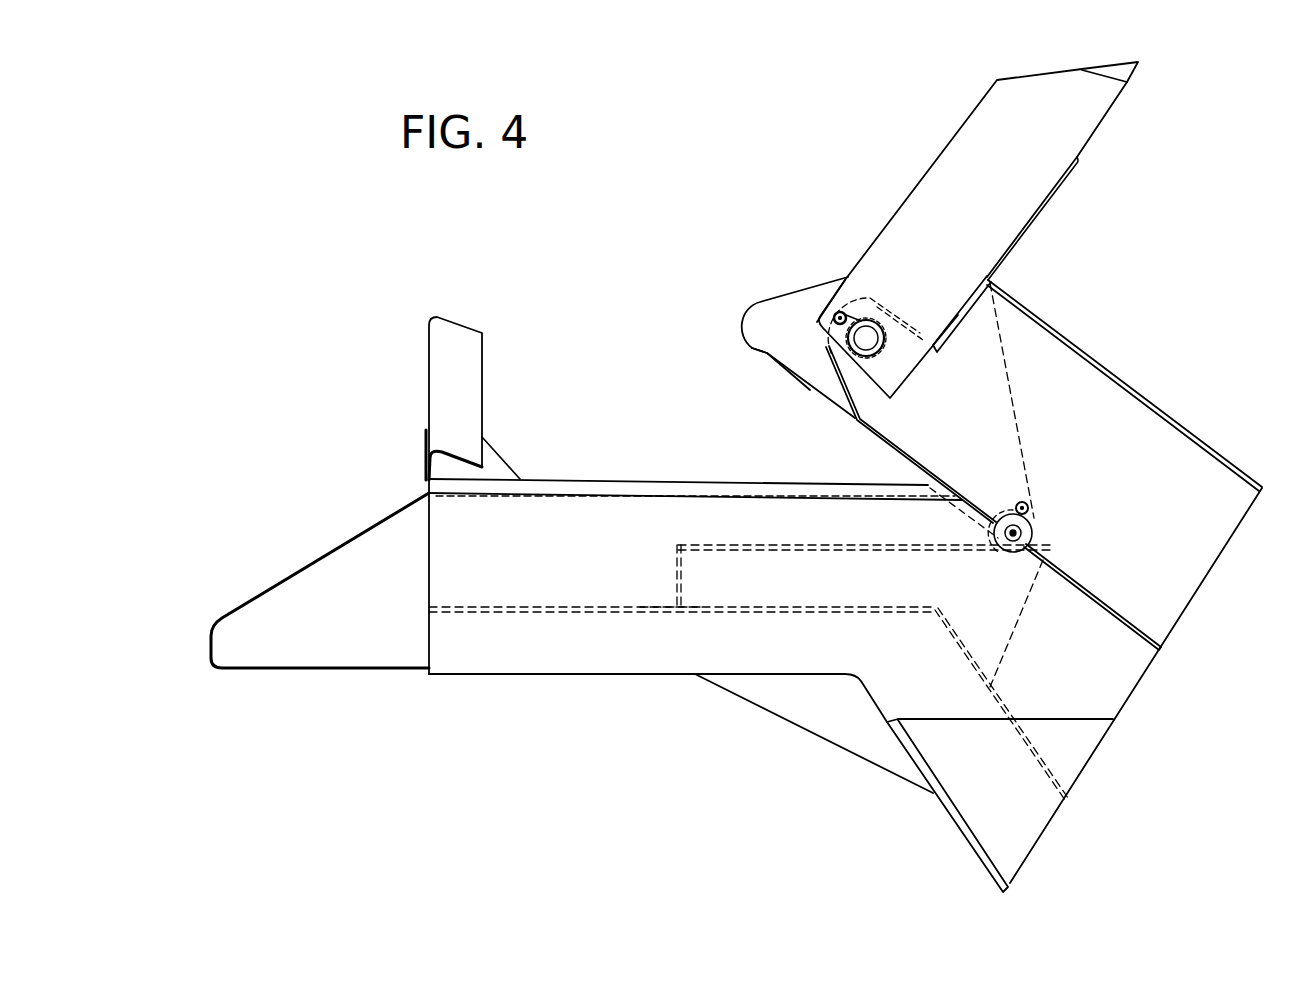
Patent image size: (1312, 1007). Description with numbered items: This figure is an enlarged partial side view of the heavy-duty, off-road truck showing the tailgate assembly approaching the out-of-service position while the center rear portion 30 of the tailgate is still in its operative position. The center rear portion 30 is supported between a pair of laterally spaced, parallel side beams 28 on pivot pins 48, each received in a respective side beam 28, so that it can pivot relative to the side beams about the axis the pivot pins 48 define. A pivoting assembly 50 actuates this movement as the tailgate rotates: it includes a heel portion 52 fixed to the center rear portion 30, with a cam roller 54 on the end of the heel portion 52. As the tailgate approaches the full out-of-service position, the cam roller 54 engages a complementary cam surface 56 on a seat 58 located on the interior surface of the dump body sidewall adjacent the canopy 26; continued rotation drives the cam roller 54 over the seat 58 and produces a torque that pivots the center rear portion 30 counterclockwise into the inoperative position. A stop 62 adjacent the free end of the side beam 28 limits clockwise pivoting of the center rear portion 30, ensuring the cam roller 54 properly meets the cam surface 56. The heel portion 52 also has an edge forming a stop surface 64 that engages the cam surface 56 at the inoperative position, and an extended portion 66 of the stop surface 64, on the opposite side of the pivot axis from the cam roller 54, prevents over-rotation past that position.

The canopy 26 is at (558, 525).
The side beam 28 is at (1085, 415).
The center rear portion 30 is at (970, 157).
The pivot pin 48 is at (868, 322).
The pivoting assembly 50 is at (1085, 195).
The heel portion 52 is at (785, 310).
The cam roller 54 is at (1032, 523).
The cam surface 56 is at (778, 548).
The seat 58 is at (705, 580).
The stop 62 is at (958, 312).
The stop surface 64 is at (883, 450).
The extended portion 66 is at (770, 353).